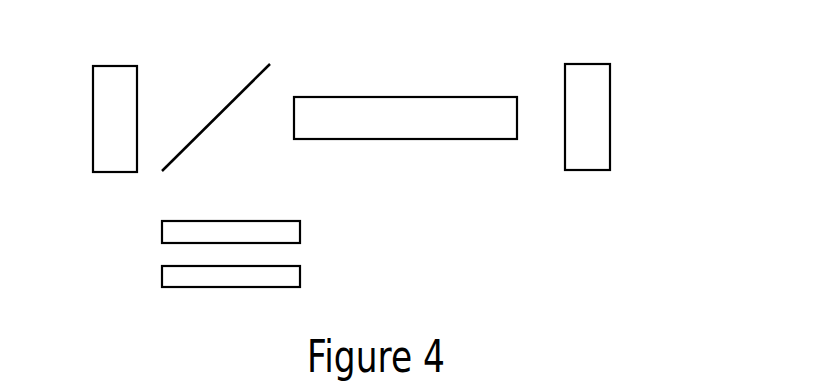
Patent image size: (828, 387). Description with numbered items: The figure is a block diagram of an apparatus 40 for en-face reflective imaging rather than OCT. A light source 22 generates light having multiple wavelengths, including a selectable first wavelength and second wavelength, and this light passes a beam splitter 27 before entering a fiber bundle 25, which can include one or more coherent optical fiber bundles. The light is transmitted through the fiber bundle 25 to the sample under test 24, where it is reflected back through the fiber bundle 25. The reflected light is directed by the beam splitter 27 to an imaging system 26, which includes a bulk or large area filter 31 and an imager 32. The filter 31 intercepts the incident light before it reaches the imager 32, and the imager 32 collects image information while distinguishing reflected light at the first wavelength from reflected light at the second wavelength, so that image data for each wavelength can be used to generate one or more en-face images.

The apparatus 40 is at (556, 18).
The light source 22 is at (124, 106).
The beam splitter 27 is at (250, 88).
The fiber bundle 25 is at (492, 133).
The sample under test 24 is at (587, 155).
The imaging system 26 is at (276, 242).
The filter 31 is at (292, 235).
The imager 32 is at (292, 277).